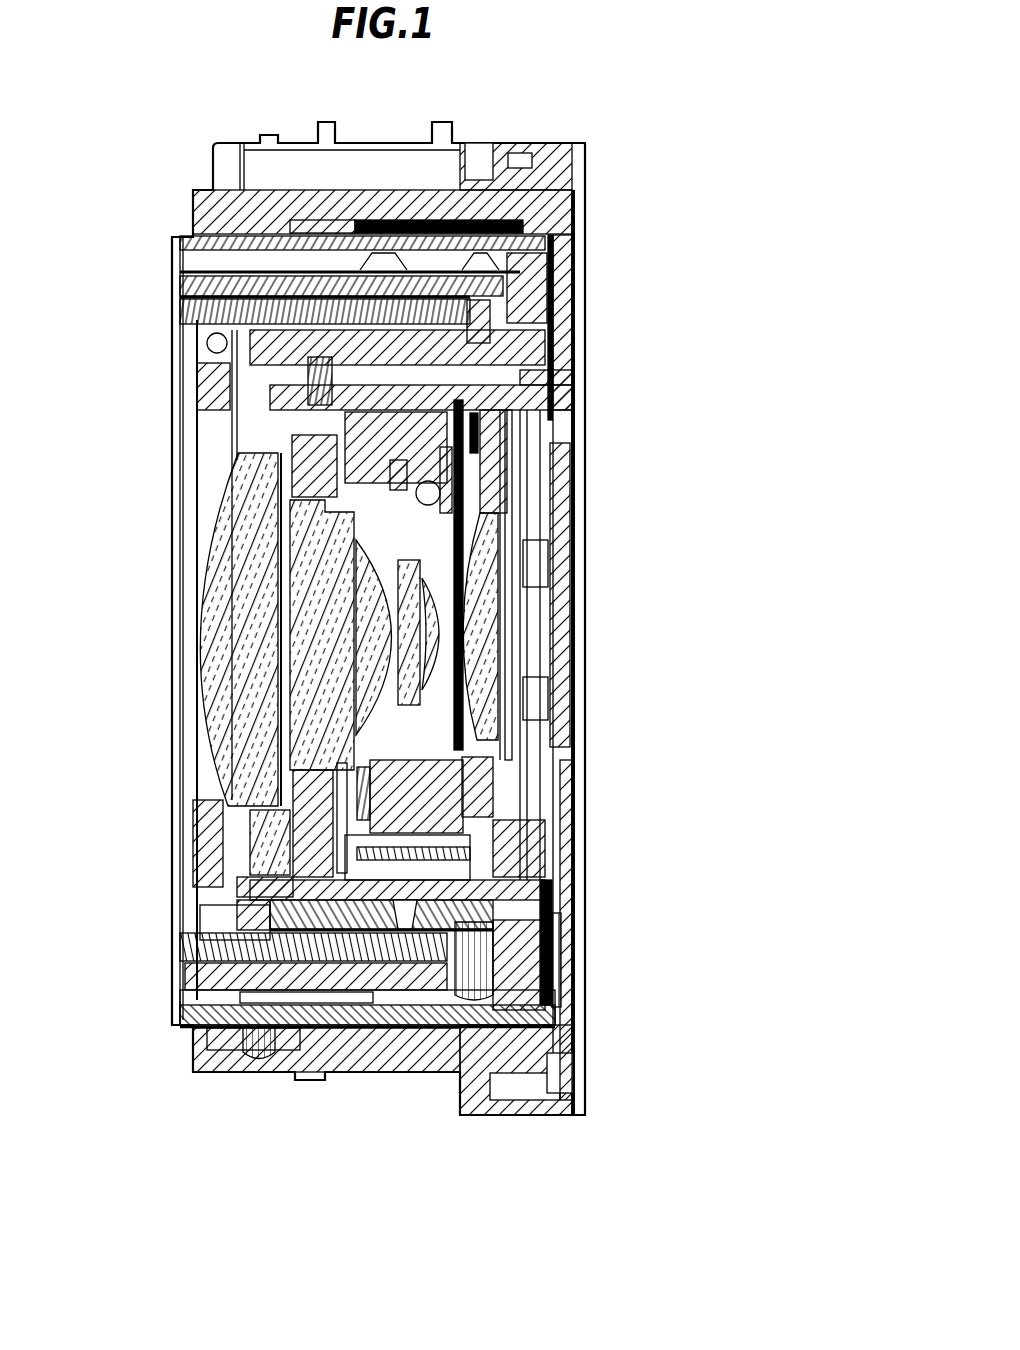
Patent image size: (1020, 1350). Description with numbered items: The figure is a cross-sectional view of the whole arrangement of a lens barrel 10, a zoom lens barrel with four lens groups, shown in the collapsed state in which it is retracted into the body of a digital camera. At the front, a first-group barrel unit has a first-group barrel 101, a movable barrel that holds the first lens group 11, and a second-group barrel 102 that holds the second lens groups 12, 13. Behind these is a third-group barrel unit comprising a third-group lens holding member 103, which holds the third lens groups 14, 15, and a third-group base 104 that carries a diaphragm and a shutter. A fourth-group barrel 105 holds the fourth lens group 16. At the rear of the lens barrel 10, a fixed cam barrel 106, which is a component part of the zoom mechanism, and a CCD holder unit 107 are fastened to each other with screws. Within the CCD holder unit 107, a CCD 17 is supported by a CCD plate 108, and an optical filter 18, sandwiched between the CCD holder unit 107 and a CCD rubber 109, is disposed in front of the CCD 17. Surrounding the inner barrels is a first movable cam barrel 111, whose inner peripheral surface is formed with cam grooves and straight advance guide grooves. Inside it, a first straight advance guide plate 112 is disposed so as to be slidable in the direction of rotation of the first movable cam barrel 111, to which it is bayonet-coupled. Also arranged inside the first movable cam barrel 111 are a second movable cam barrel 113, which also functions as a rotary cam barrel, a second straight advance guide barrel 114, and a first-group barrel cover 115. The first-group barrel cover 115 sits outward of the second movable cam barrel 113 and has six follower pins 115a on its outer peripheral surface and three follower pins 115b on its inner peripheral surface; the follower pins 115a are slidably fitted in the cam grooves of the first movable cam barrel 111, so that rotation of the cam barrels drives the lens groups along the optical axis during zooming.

The lens barrel 10 is at (140, 182).
The first-group barrel 101 is at (180, 311).
The second-group barrel 102 is at (303, 455).
The first lens group 11 is at (232, 583).
The second lens group 12 is at (307, 543).
The second lens group 13 is at (372, 627).
The third lens group 14 is at (405, 580).
The third lens group 15 is at (437, 603).
The optical filter 18 is at (456, 607).
The fourth lens group 16 is at (517, 625).
The CCD 17 is at (562, 727).
The CCD rubber 109 is at (518, 727).
The fourth-group barrel 105 is at (568, 349).
The CCD plate 108 is at (568, 493).
The third-group lens holding member 103 is at (495, 790).
The third-group base 104 is at (423, 785).
The second straight advance guide barrel 114 is at (277, 885).
The second movable cam barrel 113 is at (273, 913).
The first-group barrel cover 115 is at (270, 967).
The first movable cam barrel 111 is at (213, 1007).
The fixed cam barrel 106 is at (217, 1033).
The follower pin 115a is at (440, 1035).
The follower pin 115b is at (477, 920).
The first straight advance guide plate 112 is at (557, 960).
The CCD holder unit 107 is at (573, 1038).